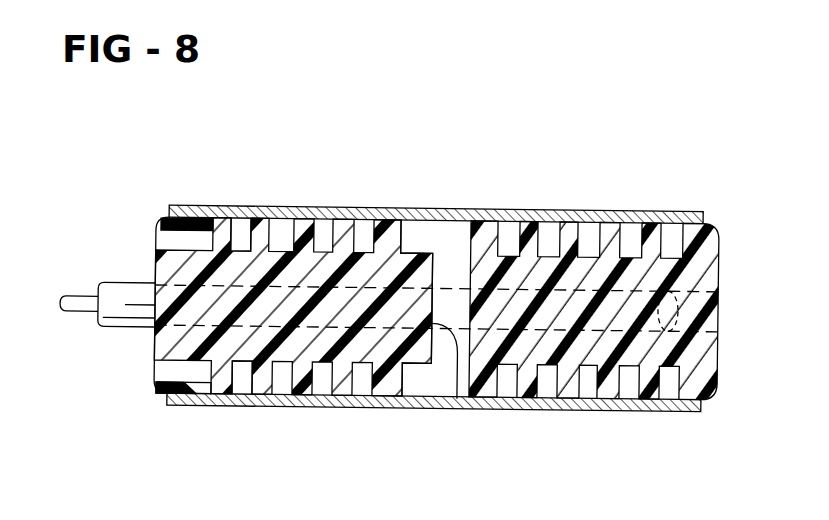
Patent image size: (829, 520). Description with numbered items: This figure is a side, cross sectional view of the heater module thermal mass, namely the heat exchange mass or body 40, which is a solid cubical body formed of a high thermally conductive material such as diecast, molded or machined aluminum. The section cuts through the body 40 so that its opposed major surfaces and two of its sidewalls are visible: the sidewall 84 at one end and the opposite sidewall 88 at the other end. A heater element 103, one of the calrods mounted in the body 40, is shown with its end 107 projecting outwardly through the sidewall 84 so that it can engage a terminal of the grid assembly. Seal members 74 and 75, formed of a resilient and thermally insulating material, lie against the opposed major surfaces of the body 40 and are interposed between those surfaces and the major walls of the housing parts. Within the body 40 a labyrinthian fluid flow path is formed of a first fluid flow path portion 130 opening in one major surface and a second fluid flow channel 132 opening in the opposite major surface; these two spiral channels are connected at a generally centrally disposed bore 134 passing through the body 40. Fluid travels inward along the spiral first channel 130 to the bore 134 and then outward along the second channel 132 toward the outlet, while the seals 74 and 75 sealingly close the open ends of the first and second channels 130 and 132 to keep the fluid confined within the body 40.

The heat exchange mass or body 40 is at (162, 214).
The sidewall 84 is at (155, 259).
The first fluid flow path portion 130 is at (245, 216).
The seal member 74 is at (538, 213).
The sidewall 88 is at (718, 262).
The end of heater element 107 is at (72, 312).
The heater element 103 is at (118, 330).
The second fluid flow path or channel 132 is at (244, 392).
The seal member 75 is at (352, 406).
The bore 134 is at (459, 405).